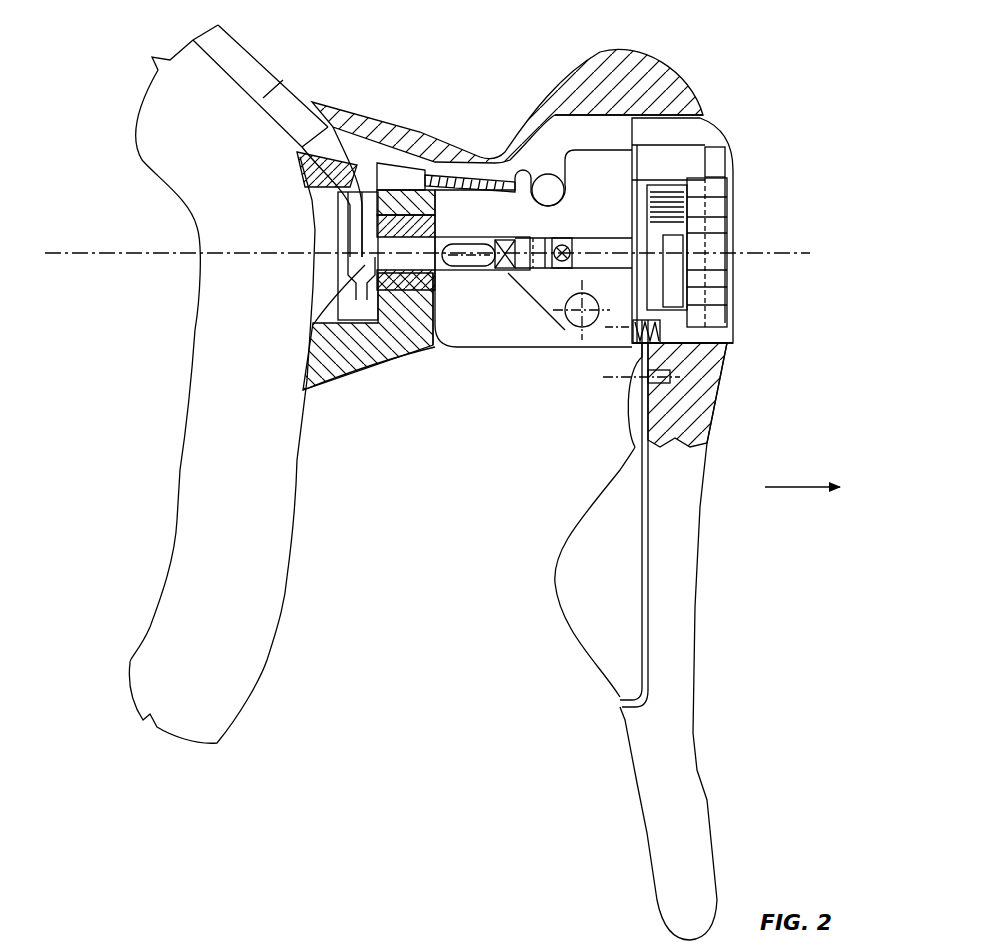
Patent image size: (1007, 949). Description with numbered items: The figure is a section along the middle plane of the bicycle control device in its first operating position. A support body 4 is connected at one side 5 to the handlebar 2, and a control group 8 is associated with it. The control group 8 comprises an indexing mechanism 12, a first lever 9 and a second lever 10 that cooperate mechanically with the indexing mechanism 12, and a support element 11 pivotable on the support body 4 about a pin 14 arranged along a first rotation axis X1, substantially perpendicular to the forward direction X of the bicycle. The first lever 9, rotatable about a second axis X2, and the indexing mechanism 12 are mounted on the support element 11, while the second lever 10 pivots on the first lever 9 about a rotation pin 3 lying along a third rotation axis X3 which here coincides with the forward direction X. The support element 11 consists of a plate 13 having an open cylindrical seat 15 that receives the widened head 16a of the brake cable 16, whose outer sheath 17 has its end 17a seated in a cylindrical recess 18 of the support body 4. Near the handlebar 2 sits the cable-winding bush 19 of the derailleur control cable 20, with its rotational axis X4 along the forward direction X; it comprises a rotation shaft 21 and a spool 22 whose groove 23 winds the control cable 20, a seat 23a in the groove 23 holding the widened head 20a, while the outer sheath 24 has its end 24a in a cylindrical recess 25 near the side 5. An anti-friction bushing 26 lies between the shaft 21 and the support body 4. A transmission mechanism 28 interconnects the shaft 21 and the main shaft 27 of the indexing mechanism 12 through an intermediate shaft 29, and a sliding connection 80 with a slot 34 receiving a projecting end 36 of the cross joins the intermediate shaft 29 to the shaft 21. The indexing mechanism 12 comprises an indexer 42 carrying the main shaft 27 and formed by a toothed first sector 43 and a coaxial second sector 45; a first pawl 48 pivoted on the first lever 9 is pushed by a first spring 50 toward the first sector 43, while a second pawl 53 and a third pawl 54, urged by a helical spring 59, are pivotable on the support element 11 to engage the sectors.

The handlebar 2 is at (195, 518).
The rotation pin 3 is at (613, 417).
The support body 4 is at (667, 82).
The side 5 is at (303, 345).
The control group 8 is at (777, 60).
The first lever 9 is at (680, 738).
The second lever 10 is at (623, 670).
The support element 11 is at (590, 143).
The indexing mechanism 12 is at (790, 130).
The plate 13 is at (612, 170).
The pin 14 is at (565, 327).
The open cylindrical seat 15 is at (552, 157).
The brake cable 16 is at (468, 182).
The widened head 16a is at (547, 192).
The outer sheath 17 is at (305, 163).
The end 17a is at (400, 180).
The cylindrical recess 18 is at (383, 173).
The cable-winding bush 19 is at (378, 340).
The control cable 20 is at (360, 232).
The widened head 20a is at (365, 265).
The rotation shaft 21 is at (400, 263).
The spool 22 is at (355, 330).
The groove 23 is at (340, 207).
The seat 23a is at (330, 272).
The outer sheath 24 is at (220, 50).
The end 24a is at (287, 107).
The cylindrical recess 25 is at (310, 100).
The anti-friction bushing 26 is at (413, 270).
The main shaft 27 is at (615, 245).
The transmission mechanism 28 is at (510, 310).
The intermediate shaft 29 is at (533, 240).
The slot 34 is at (462, 245).
The projecting end 36 is at (500, 245).
The indexer 42 is at (780, 395).
The first sector 43 is at (713, 223).
The second sector 45 is at (687, 210).
The first pawl 48 is at (713, 167).
The first spring 50 is at (713, 142).
The second pawl 53 is at (697, 242).
The third pawl 54 is at (683, 338).
The helical spring 59 is at (645, 338).
The sliding connection 80 is at (502, 283).
The forward direction X is at (775, 490).
The first rotation axis X1 is at (577, 330).
The second rotation axis X2 is at (777, 253).
The third rotation axis X3 is at (613, 375).
The rotational axis X4 is at (125, 255).